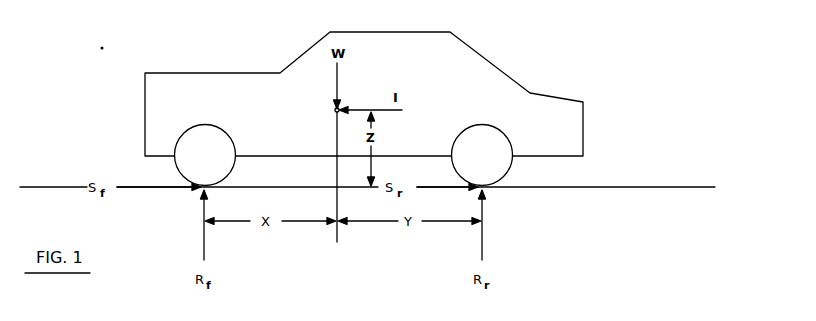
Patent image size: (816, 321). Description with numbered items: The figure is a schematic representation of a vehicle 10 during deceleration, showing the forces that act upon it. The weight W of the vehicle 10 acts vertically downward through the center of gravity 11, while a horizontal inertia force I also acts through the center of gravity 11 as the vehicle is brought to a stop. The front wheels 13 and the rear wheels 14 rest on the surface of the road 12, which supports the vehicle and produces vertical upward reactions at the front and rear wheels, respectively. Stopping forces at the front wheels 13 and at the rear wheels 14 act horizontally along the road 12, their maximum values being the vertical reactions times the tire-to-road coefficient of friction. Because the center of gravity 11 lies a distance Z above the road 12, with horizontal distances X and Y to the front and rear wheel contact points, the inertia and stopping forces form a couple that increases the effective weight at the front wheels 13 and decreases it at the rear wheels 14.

The vehicle 10 is at (506, 57).
The center of gravity 11 is at (335, 111).
The road 12 is at (678, 187).
The front wheels 13 is at (190, 163).
The rear wheels 14 is at (502, 163).